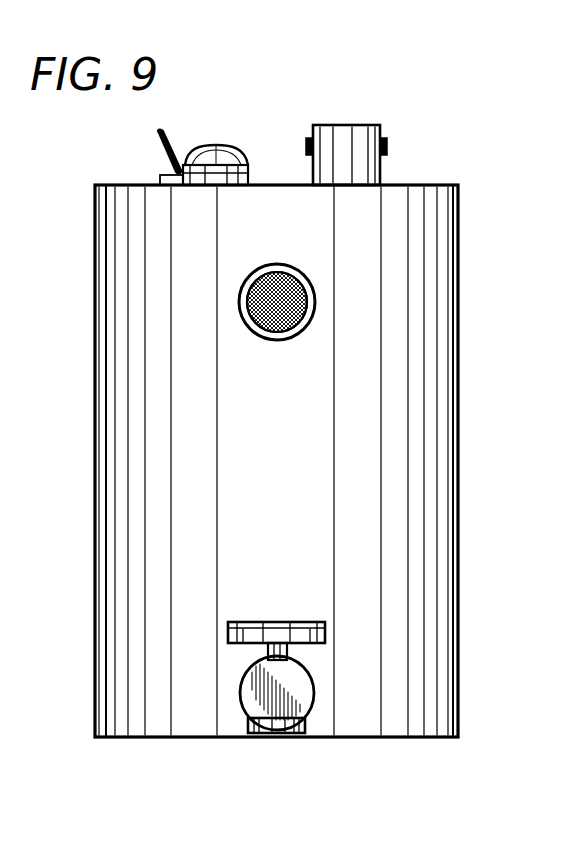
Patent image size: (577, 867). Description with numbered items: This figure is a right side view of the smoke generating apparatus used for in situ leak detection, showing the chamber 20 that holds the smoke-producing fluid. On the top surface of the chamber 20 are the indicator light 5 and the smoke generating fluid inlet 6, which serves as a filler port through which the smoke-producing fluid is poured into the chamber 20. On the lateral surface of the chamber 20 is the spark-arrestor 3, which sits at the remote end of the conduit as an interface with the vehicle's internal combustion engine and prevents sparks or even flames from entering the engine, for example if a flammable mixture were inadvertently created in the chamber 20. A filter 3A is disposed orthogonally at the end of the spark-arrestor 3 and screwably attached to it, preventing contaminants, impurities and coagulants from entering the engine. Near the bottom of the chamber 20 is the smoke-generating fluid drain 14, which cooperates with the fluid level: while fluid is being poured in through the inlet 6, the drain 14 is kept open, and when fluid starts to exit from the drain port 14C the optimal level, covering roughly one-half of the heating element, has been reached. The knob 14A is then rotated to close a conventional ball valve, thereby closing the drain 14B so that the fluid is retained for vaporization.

The spark-arrestor 3 is at (305, 280).
The filter 3A is at (253, 330).
The indicator light 5 is at (228, 148).
The smoke generating fluid inlet 6 is at (368, 133).
The smoke-generating fluid drain 14 is at (292, 680).
The knob 14A is at (290, 622).
The drain 14B is at (307, 700).
The drain port 14C is at (247, 737).
The chamber 20 is at (440, 357).